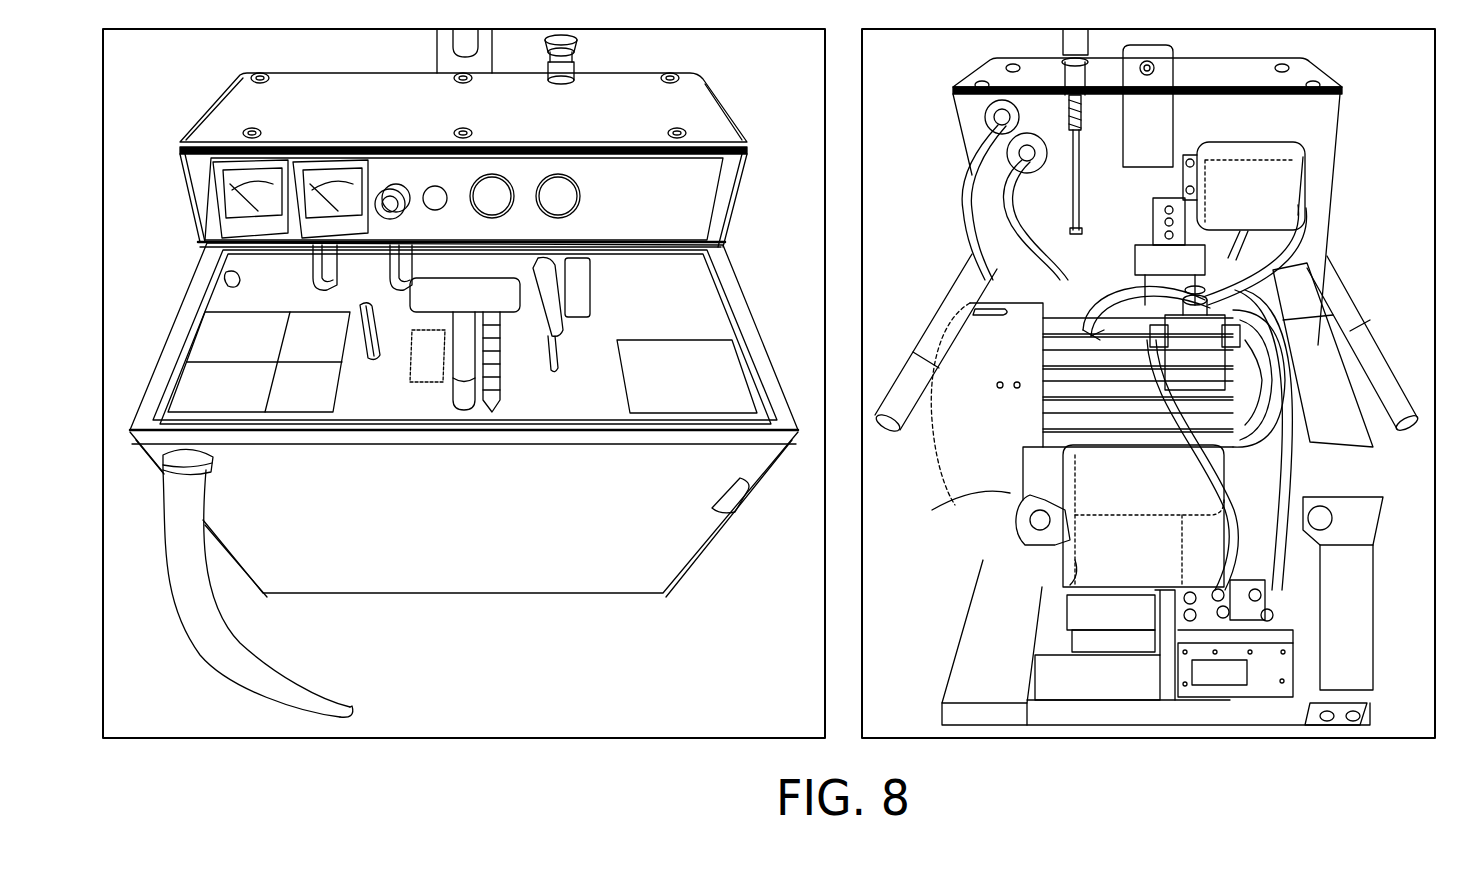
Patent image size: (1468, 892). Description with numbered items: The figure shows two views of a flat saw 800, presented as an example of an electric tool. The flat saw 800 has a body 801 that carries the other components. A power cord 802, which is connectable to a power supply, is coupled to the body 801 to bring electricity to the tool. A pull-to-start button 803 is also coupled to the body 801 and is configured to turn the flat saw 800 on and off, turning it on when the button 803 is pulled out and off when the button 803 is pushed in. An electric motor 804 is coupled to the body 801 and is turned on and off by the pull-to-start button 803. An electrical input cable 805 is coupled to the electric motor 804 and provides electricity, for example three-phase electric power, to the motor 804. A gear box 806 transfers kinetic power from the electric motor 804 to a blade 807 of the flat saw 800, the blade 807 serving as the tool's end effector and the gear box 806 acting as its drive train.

The flat saw 800 is at (736, 75).
The body 801 is at (684, 540).
The power cord 802 is at (237, 680).
The pull-to-start button 803 is at (397, 181).
The electric motor 804 is at (968, 330).
The electrical input cable 805 is at (1042, 513).
The gear box 806 is at (1283, 636).
The blade 807 is at (1387, 700).